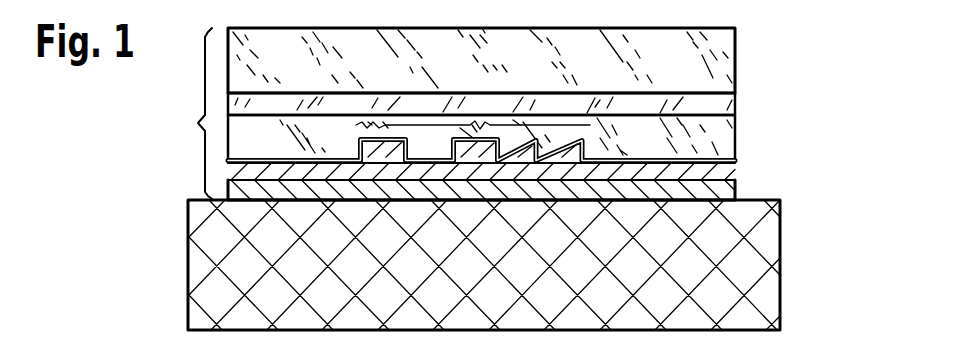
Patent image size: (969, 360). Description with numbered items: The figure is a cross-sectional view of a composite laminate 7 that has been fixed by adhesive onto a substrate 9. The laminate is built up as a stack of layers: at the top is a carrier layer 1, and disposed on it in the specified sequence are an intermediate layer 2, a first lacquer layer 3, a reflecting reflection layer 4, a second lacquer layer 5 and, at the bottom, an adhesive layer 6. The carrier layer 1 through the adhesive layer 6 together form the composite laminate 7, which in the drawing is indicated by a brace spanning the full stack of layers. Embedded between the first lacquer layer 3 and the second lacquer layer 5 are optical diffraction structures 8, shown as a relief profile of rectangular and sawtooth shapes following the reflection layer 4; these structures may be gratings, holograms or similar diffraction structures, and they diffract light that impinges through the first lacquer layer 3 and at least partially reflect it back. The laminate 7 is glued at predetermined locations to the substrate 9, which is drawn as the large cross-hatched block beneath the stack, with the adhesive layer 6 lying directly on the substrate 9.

The carrier layer 1 is at (735, 62).
The intermediate layer 2 is at (735, 103).
The first lacquer layer 3 is at (733, 138).
The reflecting reflection layer 4 is at (735, 157).
The second lacquer layer 5 is at (737, 170).
The adhesive layer 6 is at (737, 190).
The composite laminate 7 is at (205, 136).
The optical diffraction structures 8 is at (490, 125).
The substrate 9 is at (772, 268).